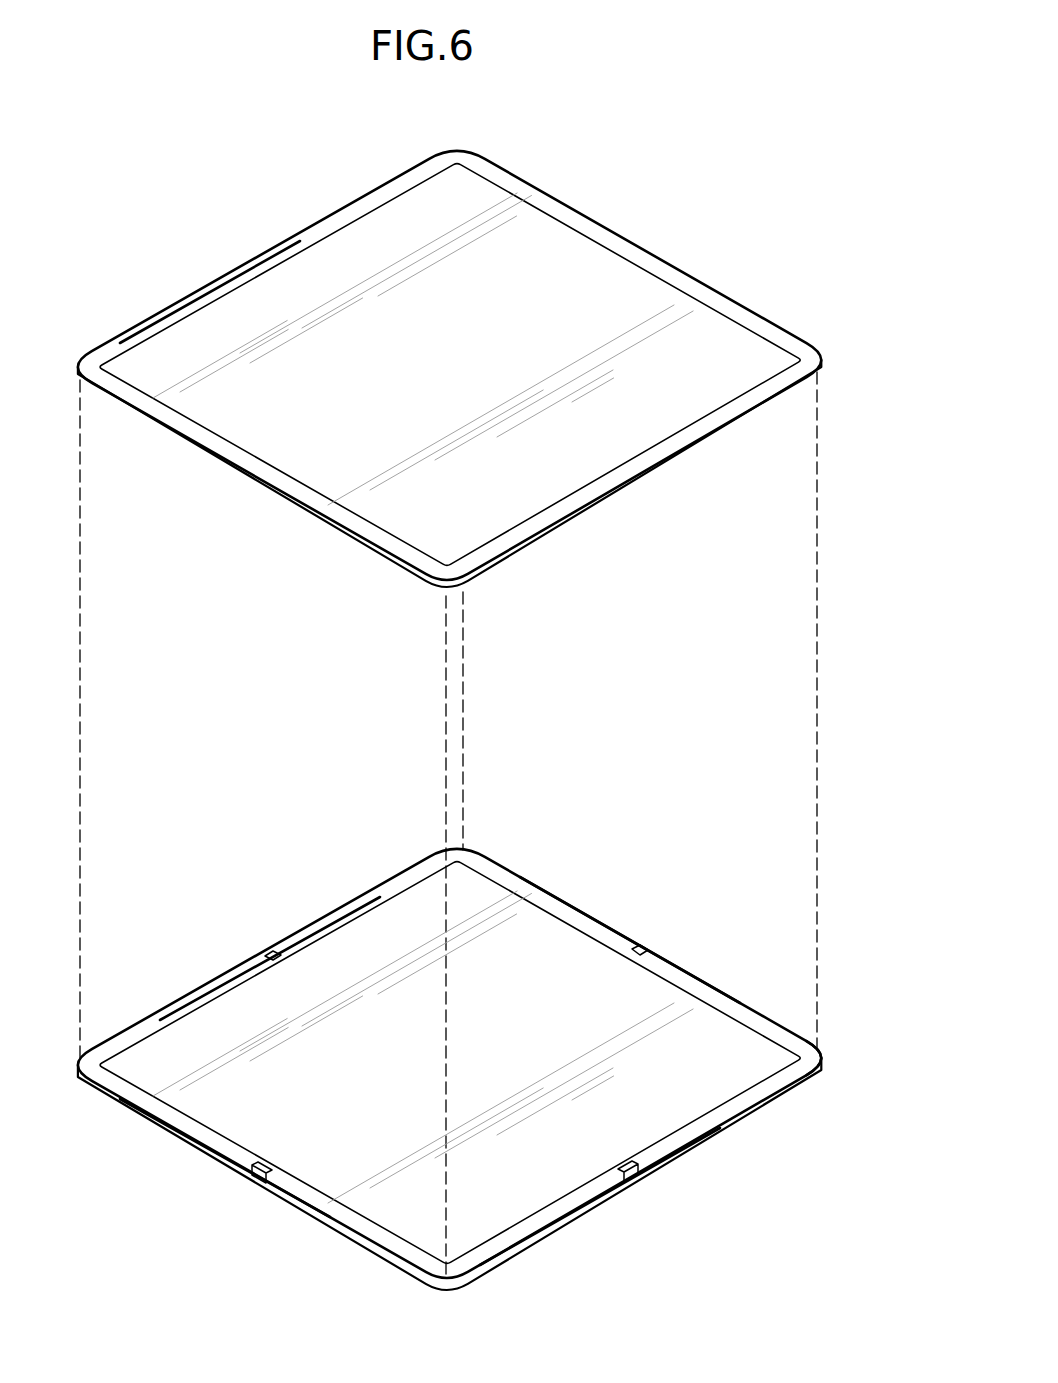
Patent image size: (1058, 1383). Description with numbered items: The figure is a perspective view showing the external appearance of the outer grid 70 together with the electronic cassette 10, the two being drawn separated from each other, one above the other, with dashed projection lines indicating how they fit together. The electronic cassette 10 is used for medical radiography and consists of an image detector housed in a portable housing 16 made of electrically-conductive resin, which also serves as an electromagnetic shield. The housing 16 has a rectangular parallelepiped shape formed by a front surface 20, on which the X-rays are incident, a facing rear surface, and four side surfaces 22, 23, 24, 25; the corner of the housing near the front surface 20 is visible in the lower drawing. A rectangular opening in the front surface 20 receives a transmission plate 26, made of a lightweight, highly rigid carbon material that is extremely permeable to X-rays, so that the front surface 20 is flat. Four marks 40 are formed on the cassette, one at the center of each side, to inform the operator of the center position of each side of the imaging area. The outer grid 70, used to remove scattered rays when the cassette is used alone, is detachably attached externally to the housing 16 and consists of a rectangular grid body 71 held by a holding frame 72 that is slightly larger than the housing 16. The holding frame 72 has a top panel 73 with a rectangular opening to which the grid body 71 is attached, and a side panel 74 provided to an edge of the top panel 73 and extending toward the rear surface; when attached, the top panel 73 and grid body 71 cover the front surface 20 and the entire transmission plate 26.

The electronic cassette 10 is at (474, 1056).
The housing 16 is at (667, 963).
The front surface 20 is at (811, 1054).
The side surface 22 is at (578, 904).
The side surface 23 is at (209, 1153).
The side surface 24 is at (533, 1233).
The side surface 25 is at (246, 972).
The transmission plate 26 is at (487, 886).
The mark 40 is at (275, 957).
The outer grid 70 is at (449, 352).
The grid body 71 is at (350, 242).
The holding frame 72 is at (178, 302).
The top panel 73 is at (515, 186).
The side panel 74 is at (660, 466).